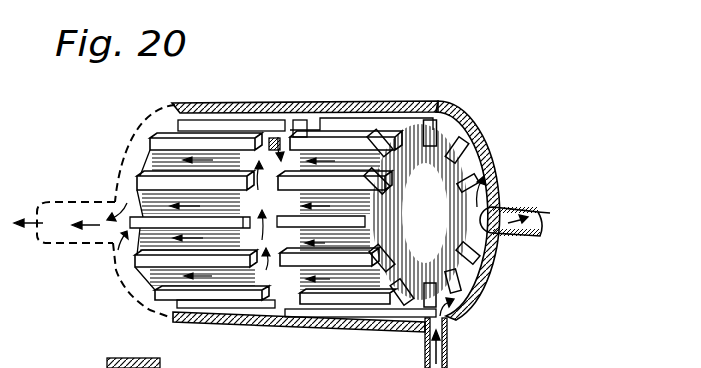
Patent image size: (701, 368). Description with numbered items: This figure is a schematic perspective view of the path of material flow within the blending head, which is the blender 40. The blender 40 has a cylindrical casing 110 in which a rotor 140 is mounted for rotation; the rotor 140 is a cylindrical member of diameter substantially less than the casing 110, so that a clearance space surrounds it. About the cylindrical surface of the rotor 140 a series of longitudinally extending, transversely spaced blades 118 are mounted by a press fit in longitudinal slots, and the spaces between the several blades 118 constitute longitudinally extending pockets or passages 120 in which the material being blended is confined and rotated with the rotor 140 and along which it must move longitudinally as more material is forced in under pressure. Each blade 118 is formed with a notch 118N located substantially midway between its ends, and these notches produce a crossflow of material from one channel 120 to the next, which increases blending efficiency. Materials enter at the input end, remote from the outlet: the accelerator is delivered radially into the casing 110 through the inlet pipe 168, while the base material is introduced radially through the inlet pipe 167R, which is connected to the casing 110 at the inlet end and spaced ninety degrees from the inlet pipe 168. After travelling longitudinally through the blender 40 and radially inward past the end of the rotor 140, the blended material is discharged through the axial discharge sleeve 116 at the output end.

The blender 40 is at (463, 95).
The discharge sleeve 116 is at (53, 202).
The blades 118 is at (351, 140).
The notch 118N is at (300, 124).
The cylindrical casing 110 is at (492, 150).
The pockets or passages 120 is at (365, 212).
The rotor 140 is at (418, 176).
The inlet pipe 167R is at (538, 237).
The inlet pipe 168 is at (460, 353).